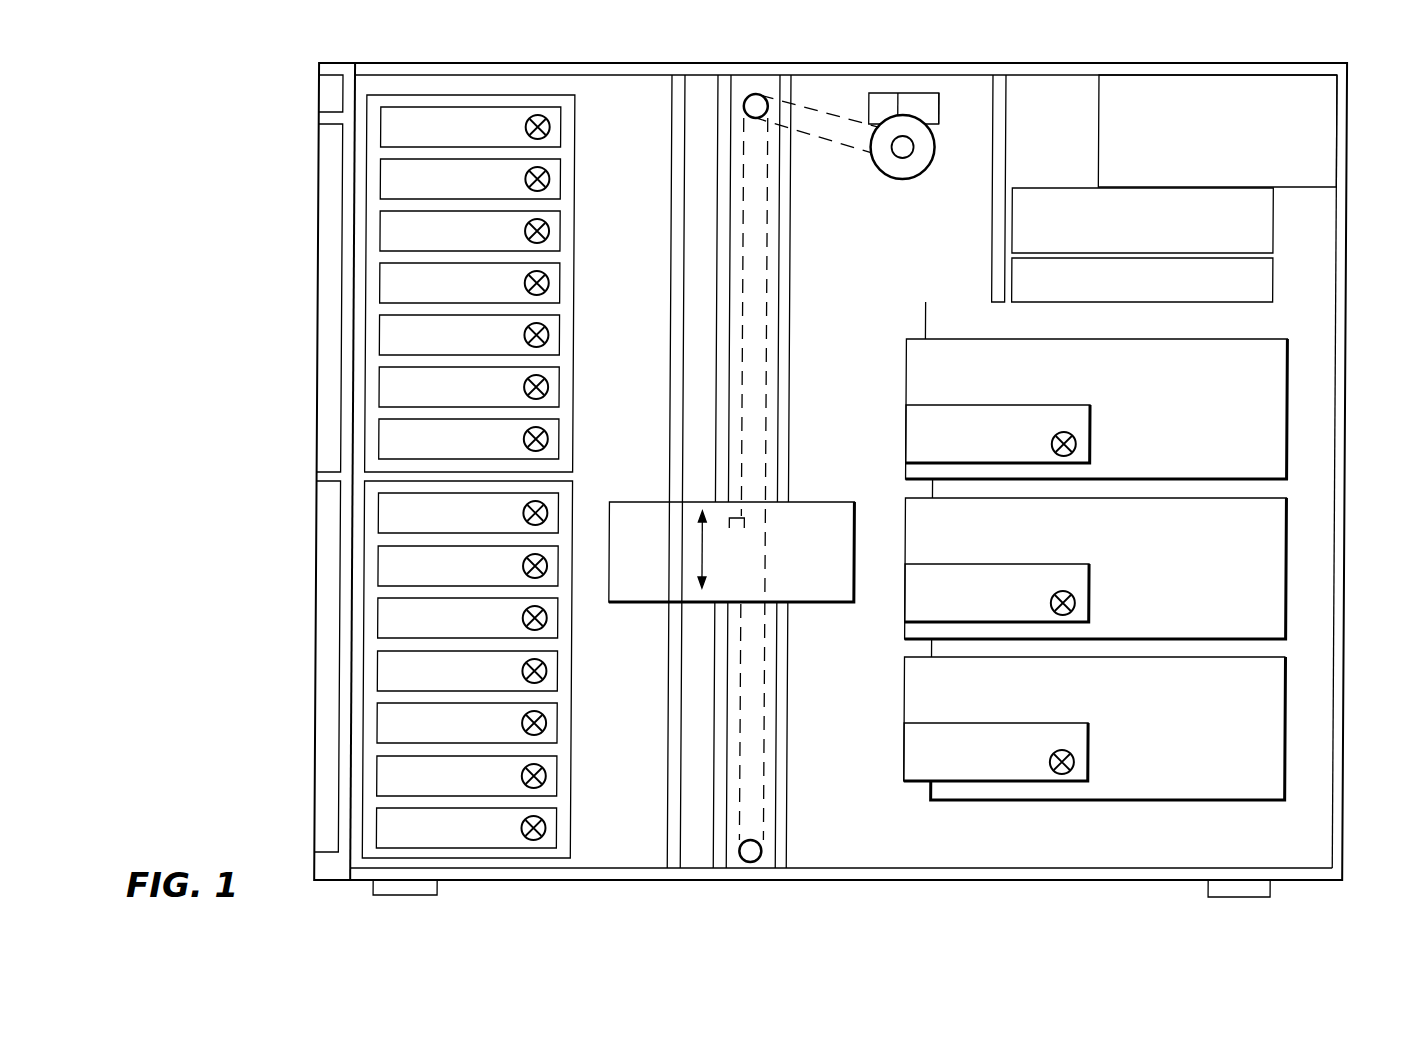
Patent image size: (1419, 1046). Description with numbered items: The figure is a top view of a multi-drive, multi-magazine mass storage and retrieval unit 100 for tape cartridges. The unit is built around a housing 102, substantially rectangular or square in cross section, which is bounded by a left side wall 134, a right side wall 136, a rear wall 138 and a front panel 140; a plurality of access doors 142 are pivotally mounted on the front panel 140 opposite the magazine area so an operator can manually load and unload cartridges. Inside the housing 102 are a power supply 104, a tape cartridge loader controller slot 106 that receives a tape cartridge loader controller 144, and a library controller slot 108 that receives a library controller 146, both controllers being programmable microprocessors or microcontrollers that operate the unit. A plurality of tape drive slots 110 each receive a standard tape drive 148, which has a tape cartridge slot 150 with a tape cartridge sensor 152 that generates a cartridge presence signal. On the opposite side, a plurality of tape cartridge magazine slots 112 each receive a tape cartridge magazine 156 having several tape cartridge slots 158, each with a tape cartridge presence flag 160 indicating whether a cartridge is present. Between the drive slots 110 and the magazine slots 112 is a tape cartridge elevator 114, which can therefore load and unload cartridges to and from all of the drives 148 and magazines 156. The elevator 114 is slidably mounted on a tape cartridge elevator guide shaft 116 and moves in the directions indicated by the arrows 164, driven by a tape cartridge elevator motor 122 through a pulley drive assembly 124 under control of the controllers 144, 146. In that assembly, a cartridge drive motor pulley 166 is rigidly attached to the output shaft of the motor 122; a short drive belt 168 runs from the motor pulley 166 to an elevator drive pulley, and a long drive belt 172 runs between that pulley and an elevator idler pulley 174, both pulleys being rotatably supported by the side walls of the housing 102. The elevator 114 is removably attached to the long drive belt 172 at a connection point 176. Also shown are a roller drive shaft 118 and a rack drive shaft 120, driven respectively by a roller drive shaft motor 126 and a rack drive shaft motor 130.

The mass storage and retrieval unit 100 is at (235, 471).
The housing 102 is at (1030, 57).
The power supply 104 is at (1325, 162).
The tape cartridge loader controller slot 106 is at (1211, 198).
The library controller slot 108 is at (1157, 278).
The tape drive slots 110 is at (1148, 569).
The tape cartridge magazine slots 112 is at (441, 479).
The tape cartridge elevator 114 is at (732, 578).
The tape cartridge elevator guide shaft 116 is at (670, 280).
The roller drive shaft 118 is at (715, 317).
The rack drive shaft 120 is at (792, 342).
The tape cartridge elevator motor 122 is at (890, 167).
The pulley drive assembly 124 is at (745, 107).
The roller drive shaft motor 126 is at (933, 108).
The rack drive shaft motor 130 is at (869, 101).
The left side wall 134 is at (613, 73).
The right side wall 136 is at (1062, 873).
The rear wall 138 is at (1347, 65).
The front panel 140 is at (318, 67).
The access doors 142 is at (323, 237).
The tape cartridge loader controller 144 is at (1028, 205).
The library controller 146 is at (1013, 270).
The tape drive 148 is at (1272, 405).
The tape cartridge slot 150 is at (968, 407).
The tape cartridge sensor 152 is at (1078, 444).
The tape cartridge magazine 156 is at (370, 287).
The tape cartridge slots 158 is at (506, 805).
The tape cartridge presence flag 160 is at (550, 830).
The arrows 164 is at (703, 553).
The cartridge drive motor pulley 166 is at (907, 150).
The short drive belt 168 is at (813, 140).
The long drive belt 172 is at (767, 393).
The elevator idler pulley 174 is at (766, 848).
The connection point 176 is at (758, 117).